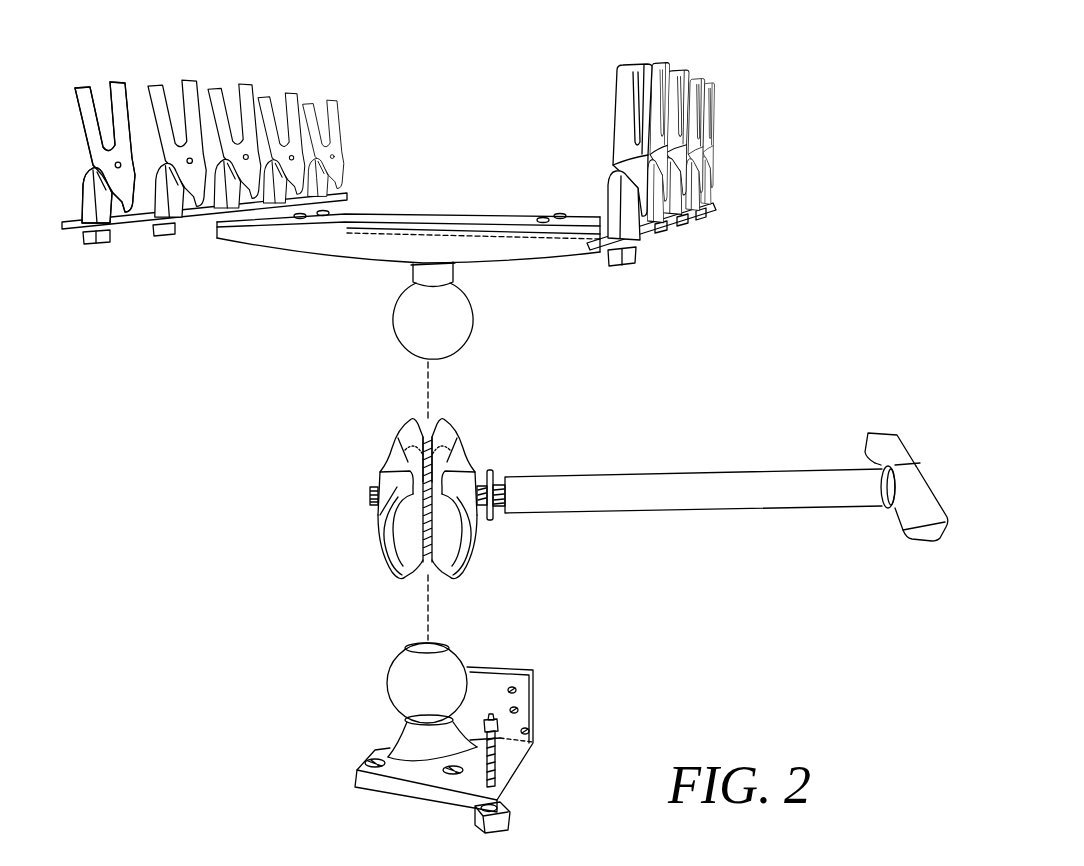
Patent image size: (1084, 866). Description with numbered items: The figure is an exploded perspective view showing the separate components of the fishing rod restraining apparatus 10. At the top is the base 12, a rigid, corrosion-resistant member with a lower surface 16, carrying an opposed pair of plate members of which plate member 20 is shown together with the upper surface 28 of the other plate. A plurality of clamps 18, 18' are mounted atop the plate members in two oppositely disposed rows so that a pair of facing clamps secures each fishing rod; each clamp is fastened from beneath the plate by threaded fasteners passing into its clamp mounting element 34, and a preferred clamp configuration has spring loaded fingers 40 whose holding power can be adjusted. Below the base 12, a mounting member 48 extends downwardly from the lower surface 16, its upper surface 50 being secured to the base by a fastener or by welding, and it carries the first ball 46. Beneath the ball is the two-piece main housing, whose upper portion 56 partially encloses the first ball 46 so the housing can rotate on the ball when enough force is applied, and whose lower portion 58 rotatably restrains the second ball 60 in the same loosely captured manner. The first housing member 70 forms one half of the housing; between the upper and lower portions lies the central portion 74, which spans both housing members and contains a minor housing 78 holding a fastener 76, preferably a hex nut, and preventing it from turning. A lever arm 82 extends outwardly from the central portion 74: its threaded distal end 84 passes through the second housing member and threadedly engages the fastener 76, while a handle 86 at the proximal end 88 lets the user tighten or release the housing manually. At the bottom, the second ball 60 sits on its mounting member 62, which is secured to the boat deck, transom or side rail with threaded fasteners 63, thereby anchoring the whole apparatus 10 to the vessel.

The fishing rod restraining apparatus 10 is at (866, 106).
The base 12 is at (403, 242).
The lower surface 16 is at (316, 262).
The clamp 18 is at (111, 117).
The clamp 18' is at (612, 127).
The plate member 20 is at (62, 231).
The upper surface 28 is at (710, 201).
The clamp mounting element 34 is at (88, 206).
The spring loaded finger 40 is at (76, 100).
The first ball 46 is at (403, 326).
The mounting member 48 is at (448, 279).
The upper surface 50 is at (456, 269).
The upper portion 56 is at (405, 432).
The lower portion 58 is at (395, 573).
The second ball 60 is at (398, 674).
The mounting member 62 is at (403, 742).
The threaded fastener 63 is at (482, 820).
The first housing member 70 is at (392, 450).
The central portion 74 is at (468, 480).
The fastener 76 is at (380, 485).
The minor housing 78 is at (394, 490).
The lever arm 82 is at (722, 480).
The threaded distal end 84 is at (370, 497).
The handle 86 is at (905, 528).
The proximal end 88 is at (890, 467).